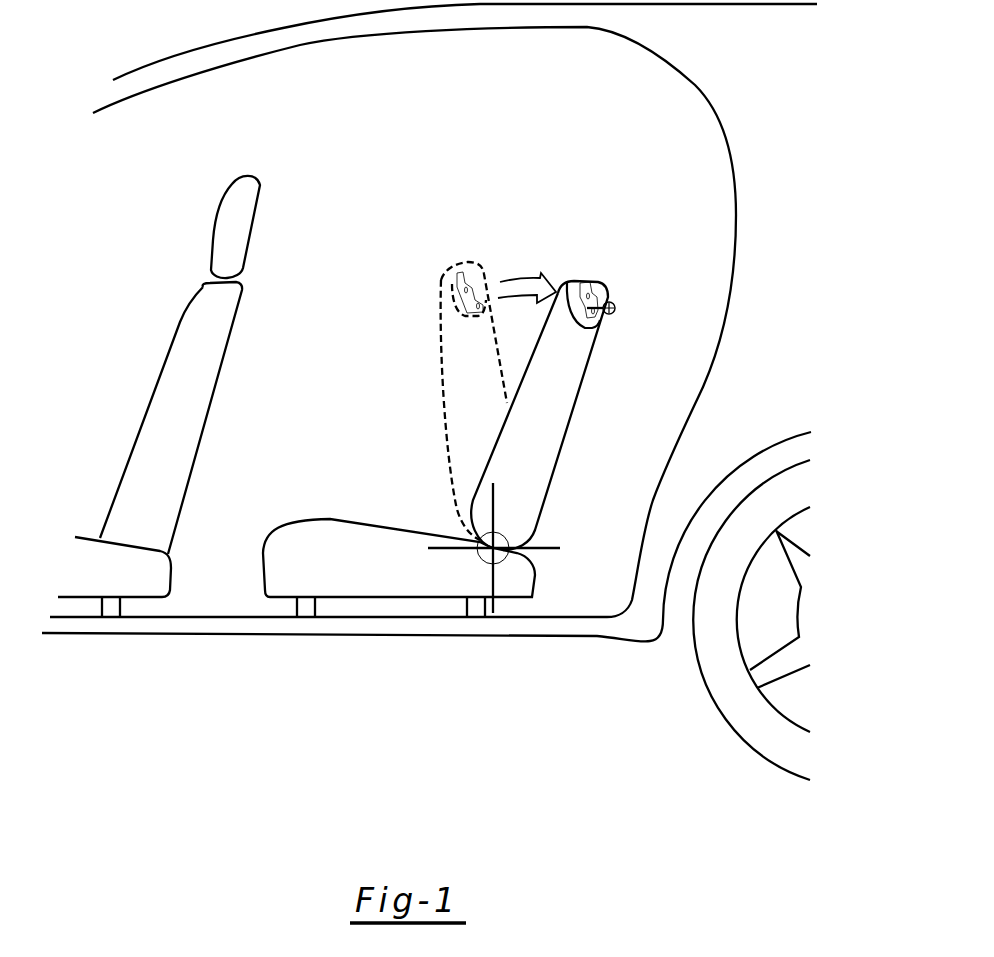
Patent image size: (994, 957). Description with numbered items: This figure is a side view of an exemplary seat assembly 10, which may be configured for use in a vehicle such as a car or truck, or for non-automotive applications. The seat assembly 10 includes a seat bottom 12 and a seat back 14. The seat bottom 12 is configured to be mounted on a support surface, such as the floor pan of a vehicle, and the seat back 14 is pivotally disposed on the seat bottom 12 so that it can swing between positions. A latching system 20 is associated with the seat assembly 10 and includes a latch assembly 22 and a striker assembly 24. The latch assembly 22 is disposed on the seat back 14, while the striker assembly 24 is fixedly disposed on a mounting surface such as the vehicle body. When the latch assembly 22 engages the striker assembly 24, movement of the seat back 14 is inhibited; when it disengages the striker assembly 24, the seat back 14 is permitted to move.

The seat assembly 10 is at (346, 302).
The seat bottom 12 is at (314, 520).
The seat back 14 is at (565, 438).
The latching system 20 is at (611, 243).
The latch assembly 22 is at (452, 266).
The striker assembly 24 is at (634, 303).